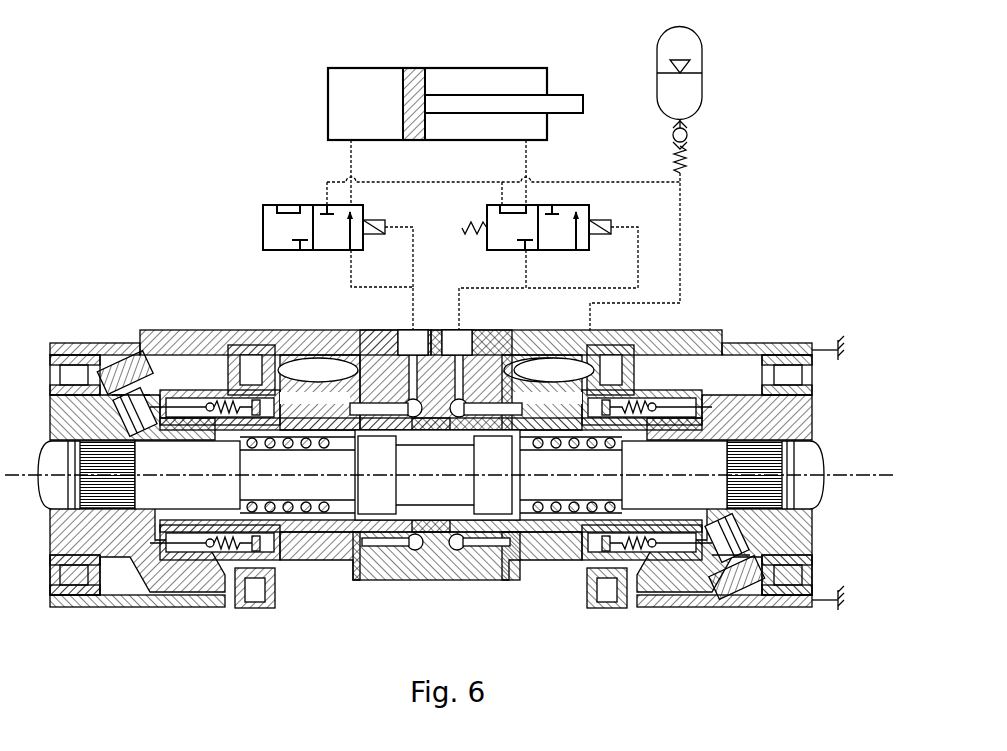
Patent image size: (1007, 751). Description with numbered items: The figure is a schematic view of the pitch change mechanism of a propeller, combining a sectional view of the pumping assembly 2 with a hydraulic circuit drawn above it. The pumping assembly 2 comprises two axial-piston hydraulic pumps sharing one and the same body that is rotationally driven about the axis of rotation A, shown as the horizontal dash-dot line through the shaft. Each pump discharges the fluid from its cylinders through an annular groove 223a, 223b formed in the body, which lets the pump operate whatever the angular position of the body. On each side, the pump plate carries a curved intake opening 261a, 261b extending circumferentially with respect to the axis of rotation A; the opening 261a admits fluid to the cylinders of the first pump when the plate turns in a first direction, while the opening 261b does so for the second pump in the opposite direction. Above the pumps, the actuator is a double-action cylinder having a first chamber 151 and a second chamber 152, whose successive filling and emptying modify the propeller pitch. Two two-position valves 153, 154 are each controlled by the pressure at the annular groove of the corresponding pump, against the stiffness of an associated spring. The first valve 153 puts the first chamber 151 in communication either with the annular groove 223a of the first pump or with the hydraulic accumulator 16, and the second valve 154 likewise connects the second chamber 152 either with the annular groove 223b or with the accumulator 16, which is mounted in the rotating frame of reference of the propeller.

The pumping assembly 2 is at (447, 440).
The hydraulic accumulator 16 is at (710, 38).
The first chamber 151 is at (380, 66).
The second chamber 152 is at (453, 66).
The first valve 153 is at (262, 226).
The second valve 154 is at (598, 212).
The annular groove 223a is at (383, 394).
The annular groove 223b is at (493, 394).
The curved intake opening 261a is at (118, 412).
The curved intake opening 261b is at (710, 540).
The axis of rotation A is at (880, 474).